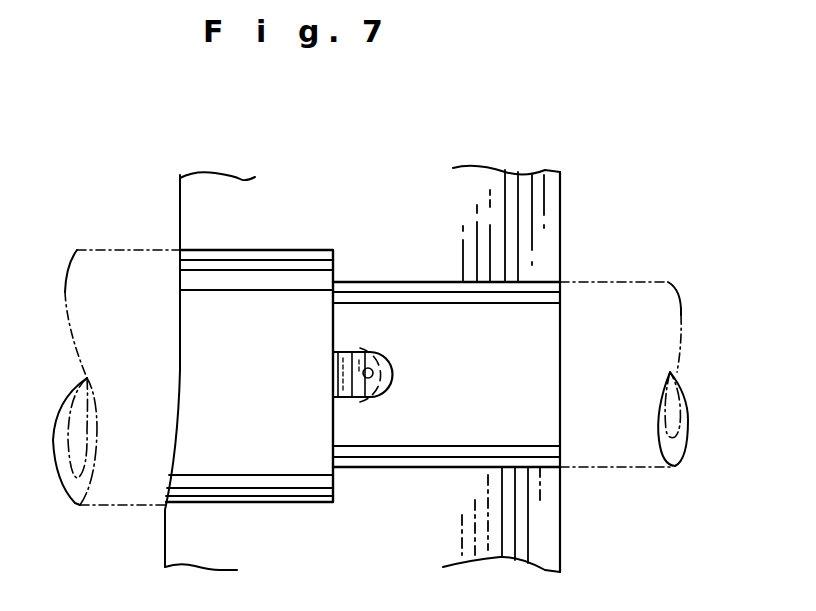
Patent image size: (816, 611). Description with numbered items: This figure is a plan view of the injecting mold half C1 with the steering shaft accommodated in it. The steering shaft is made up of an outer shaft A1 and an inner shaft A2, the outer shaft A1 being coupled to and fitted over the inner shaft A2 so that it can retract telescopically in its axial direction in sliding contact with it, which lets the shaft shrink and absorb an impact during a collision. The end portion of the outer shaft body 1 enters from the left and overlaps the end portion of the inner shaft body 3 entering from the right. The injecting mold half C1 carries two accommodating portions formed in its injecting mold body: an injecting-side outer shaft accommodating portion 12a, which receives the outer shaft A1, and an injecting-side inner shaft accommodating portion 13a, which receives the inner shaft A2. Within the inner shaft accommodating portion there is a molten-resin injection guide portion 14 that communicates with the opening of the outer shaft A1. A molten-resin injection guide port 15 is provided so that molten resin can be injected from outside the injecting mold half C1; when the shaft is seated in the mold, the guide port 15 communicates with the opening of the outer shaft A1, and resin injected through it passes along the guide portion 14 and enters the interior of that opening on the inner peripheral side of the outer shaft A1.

The outer shaft body 1 is at (145, 508).
The inner shaft body 3 is at (650, 470).
The injecting-side outer shaft accommodating portion 12a is at (268, 251).
The injecting-side inner shaft accommodating portion 13a is at (473, 284).
The molten-resin injection guide portion 14 is at (398, 386).
The molten-resin injection guide port 15 is at (396, 350).
The outer shaft A1 is at (115, 247).
The inner shaft A2 is at (626, 279).
The injecting mold half C1 is at (561, 212).